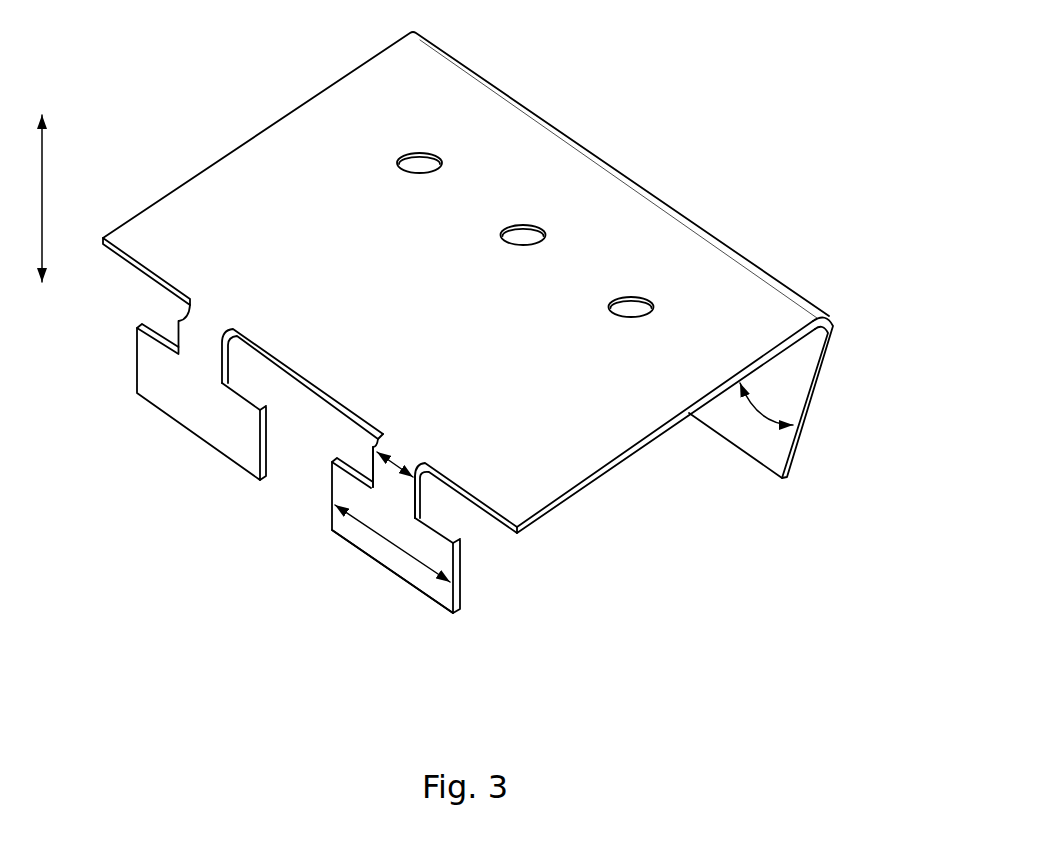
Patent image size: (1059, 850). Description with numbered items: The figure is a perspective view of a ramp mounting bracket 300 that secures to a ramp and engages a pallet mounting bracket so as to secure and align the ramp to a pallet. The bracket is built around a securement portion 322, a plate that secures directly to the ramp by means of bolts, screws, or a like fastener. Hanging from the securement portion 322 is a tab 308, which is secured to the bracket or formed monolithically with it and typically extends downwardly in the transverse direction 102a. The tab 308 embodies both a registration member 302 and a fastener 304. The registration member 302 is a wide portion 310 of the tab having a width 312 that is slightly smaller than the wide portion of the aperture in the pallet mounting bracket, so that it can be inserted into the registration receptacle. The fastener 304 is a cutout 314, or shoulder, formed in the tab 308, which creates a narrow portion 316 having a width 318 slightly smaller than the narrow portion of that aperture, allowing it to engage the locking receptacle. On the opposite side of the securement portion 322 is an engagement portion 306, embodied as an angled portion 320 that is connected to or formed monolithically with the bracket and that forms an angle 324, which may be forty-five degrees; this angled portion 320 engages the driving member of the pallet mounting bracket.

The ramp mounting bracket 300 is at (471, 349).
The registration member 302 is at (318, 478).
The fastener 304 is at (157, 324).
The engagement portion 306 is at (787, 438).
The tab 308 is at (392, 503).
The wide portion 310 is at (418, 585).
The width 312 is at (390, 543).
The cutout 314 is at (415, 452).
The narrow portion 316 is at (392, 486).
The width 318 is at (398, 458).
The angled portion 320 is at (812, 397).
The securement portion 322 is at (528, 134).
The angle 324 is at (757, 416).
The transverse direction 102a is at (42, 188).